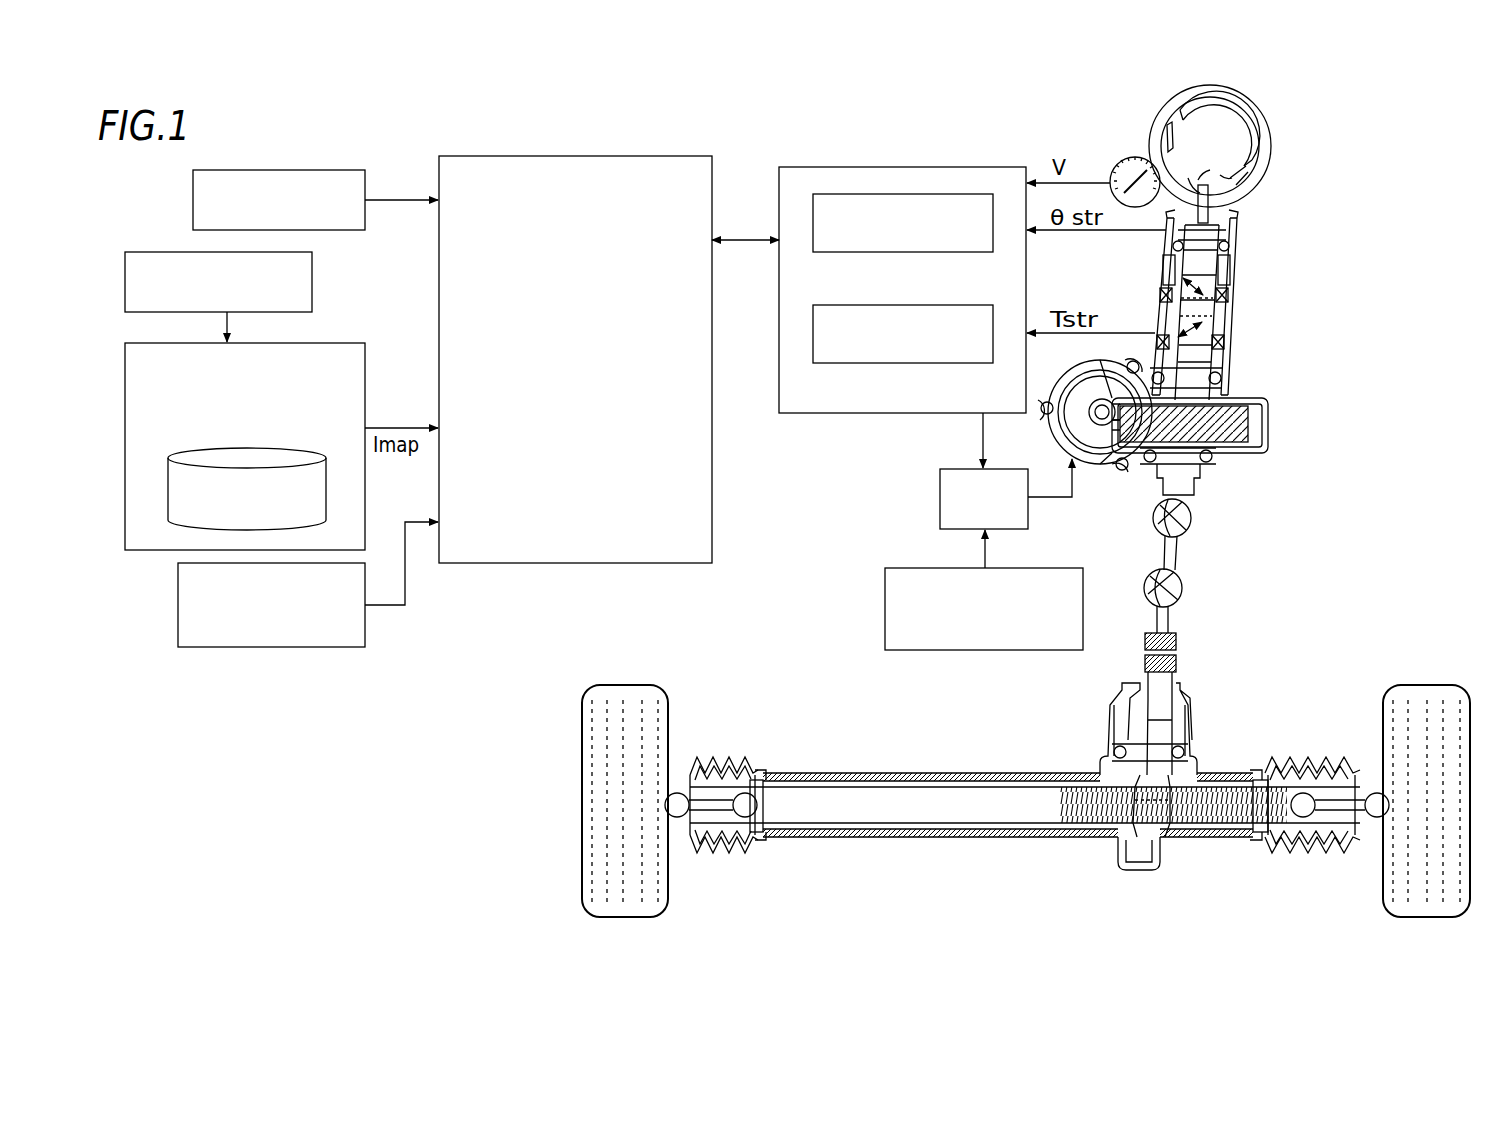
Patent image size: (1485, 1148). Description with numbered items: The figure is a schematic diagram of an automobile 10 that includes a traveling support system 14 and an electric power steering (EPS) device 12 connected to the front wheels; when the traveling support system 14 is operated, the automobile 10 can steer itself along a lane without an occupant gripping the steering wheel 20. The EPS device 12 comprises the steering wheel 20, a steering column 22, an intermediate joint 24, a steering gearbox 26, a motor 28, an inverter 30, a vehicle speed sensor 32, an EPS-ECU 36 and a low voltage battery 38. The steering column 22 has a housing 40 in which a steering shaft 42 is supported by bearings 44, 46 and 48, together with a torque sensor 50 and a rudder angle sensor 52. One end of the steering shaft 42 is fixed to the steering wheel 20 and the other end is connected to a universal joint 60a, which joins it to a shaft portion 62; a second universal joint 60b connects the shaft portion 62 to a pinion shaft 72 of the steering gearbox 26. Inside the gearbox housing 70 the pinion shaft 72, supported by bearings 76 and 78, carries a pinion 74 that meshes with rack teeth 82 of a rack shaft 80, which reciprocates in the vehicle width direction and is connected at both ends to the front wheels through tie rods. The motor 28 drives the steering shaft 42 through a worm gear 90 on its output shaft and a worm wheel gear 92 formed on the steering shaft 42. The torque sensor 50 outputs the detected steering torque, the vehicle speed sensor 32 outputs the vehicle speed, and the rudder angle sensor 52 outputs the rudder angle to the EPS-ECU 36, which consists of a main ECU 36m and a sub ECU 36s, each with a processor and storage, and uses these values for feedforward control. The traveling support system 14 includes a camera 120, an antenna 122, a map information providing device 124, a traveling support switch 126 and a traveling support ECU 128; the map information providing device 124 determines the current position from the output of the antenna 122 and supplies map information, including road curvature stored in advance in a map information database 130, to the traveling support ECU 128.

The automobile 10 is at (1354, 177).
The electric power steering (EPS) device 12 is at (1340, 210).
The traveling support system 14 is at (160, 592).
The steering wheel 20 is at (1172, 120).
The steering column 22 is at (1240, 262).
The intermediate joint 24 is at (1272, 553).
The steering gearbox 26 is at (845, 840).
The motor 28 is at (1090, 463).
The inverter 30 is at (1013, 470).
The vehicle speed sensor 32 is at (1118, 160).
The EPS-ECU 36 is at (802, 167).
The main ECU 36m is at (915, 194).
The sub ECU 36s is at (813, 333).
The low voltage battery 38 is at (1034, 651).
The housing 40 is at (1258, 455).
The steering shaft 42 is at (1222, 355).
The bearing 44 is at (1162, 244).
The bearing 46 is at (1224, 378).
The bearing 48 is at (1208, 458).
The torque sensor 50 is at (1226, 345).
The rudder angle sensor 52 is at (1238, 233).
The universal joint 60a is at (1192, 520).
The universal joint 60b is at (1184, 585).
The shaft portion 62 is at (1178, 549).
The housing 70 is at (978, 838).
The pinion shaft 72 is at (1177, 668).
The pinion 74 is at (1142, 870).
The bearing 76 is at (1110, 752).
The bearing 78 is at (1118, 851).
The rack shaft 80 is at (928, 815).
The rack teeth 82 is at (1200, 822).
The worm gear 90 is at (1103, 430).
The worm wheel gear 92 is at (1250, 426).
The camera 120 is at (322, 170).
The antenna 122 is at (148, 252).
The map information providing device 124 is at (330, 343).
The traveling support switch 126 is at (318, 647).
The traveling support ECU 128 is at (462, 156).
The map information database 130 is at (208, 450).